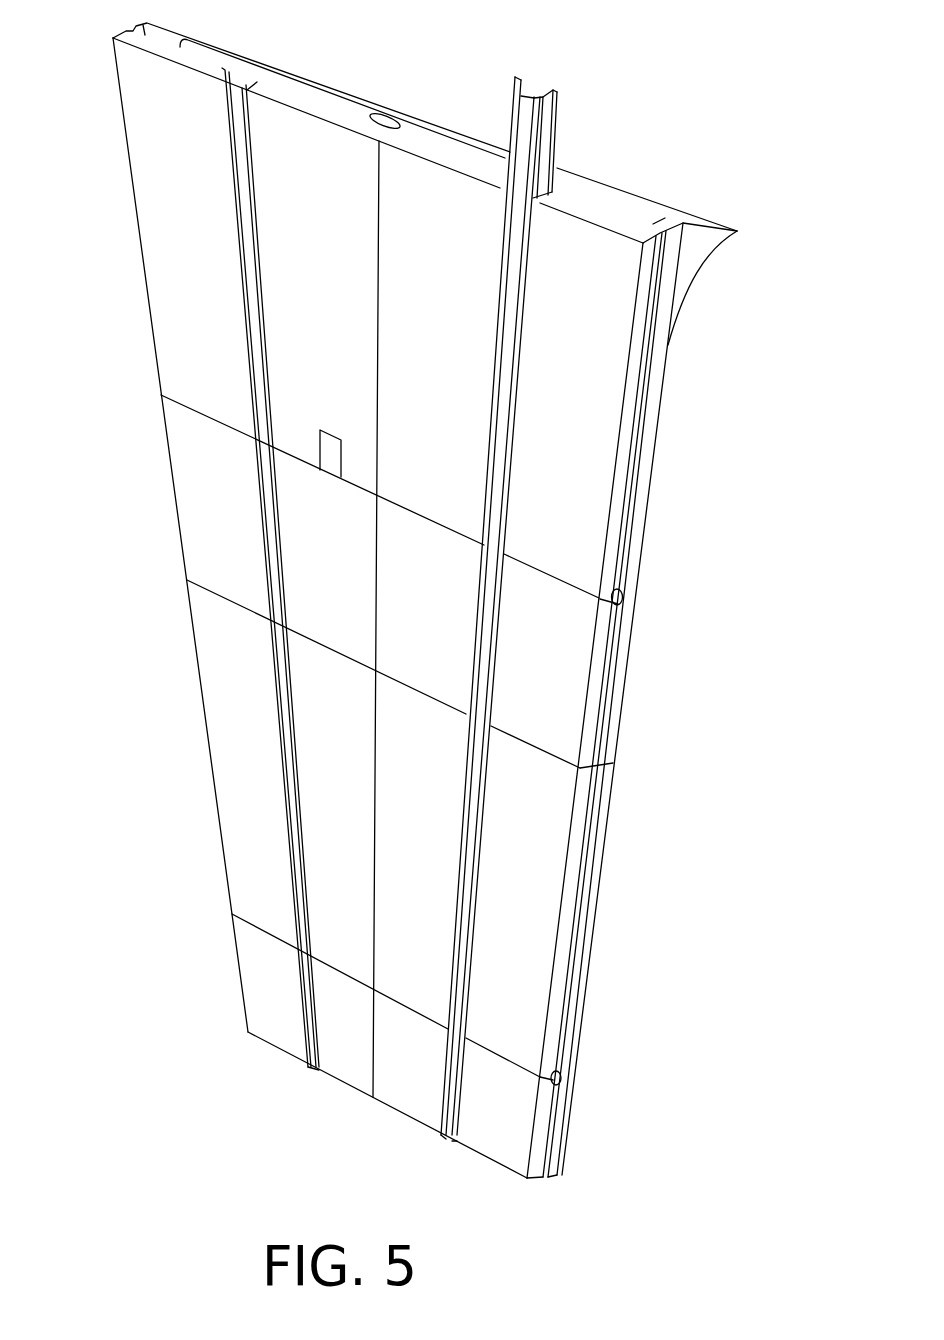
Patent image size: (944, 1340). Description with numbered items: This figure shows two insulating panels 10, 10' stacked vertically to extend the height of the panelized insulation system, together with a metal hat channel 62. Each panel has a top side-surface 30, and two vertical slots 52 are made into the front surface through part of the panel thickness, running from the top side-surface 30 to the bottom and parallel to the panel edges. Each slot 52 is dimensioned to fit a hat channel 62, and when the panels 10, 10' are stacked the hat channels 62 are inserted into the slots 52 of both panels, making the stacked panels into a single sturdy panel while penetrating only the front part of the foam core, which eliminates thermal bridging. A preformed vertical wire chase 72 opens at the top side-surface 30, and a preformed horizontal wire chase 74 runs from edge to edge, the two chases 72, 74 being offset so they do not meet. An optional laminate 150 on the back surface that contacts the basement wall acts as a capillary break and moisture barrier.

The insulating panel 10 is at (423, 600).
The insulating panel 10' is at (605, 700).
The top side-surface 30 is at (583, 197).
The vertical slot 52 is at (257, 82).
The hat channel 62 is at (523, 88).
The vertical wire chase 72 is at (382, 112).
The horizontal wire chase 74 is at (620, 605).
The laminate 150 is at (713, 248).